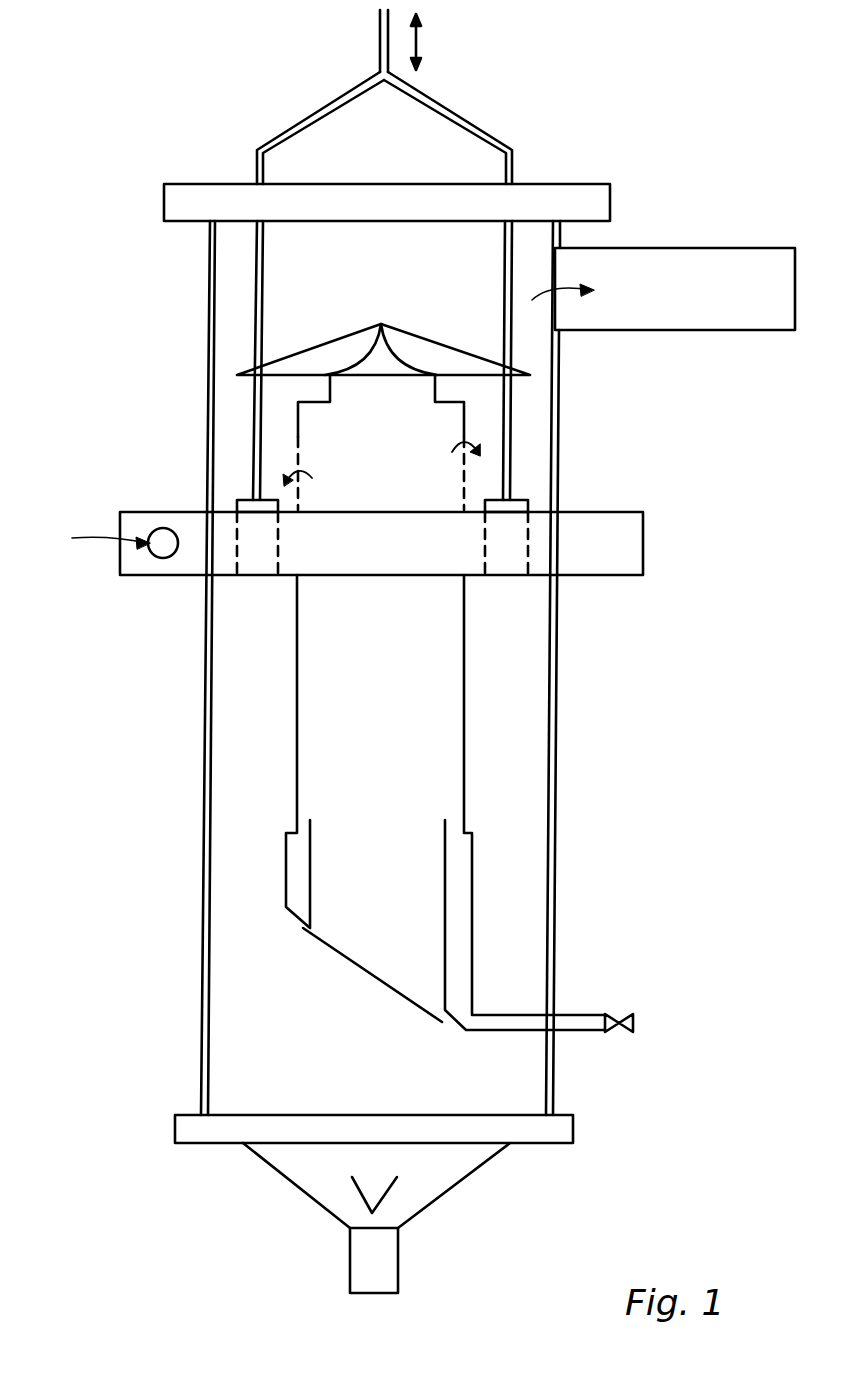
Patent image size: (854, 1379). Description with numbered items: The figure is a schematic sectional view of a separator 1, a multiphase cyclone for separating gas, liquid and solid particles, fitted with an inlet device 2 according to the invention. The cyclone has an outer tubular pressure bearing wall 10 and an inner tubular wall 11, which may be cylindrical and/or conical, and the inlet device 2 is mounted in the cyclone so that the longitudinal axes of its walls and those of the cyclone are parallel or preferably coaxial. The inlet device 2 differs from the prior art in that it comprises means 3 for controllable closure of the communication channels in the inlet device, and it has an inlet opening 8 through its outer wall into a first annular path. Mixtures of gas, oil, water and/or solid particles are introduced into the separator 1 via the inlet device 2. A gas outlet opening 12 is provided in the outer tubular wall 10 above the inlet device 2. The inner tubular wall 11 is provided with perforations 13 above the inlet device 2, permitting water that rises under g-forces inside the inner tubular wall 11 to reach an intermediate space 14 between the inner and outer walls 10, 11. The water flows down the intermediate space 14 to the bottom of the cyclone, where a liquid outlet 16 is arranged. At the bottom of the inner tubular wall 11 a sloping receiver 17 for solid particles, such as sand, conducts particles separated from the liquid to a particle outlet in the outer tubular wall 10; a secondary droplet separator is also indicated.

The separator 1 is at (238, 778).
The inlet device 2 is at (99, 541).
The means for controllable closure 3 is at (468, 122).
The inlet opening 8 is at (163, 528).
The outer tubular pressure bearing wall 10 is at (558, 770).
The inner tubular wall 11 is at (295, 706).
The gas outlet opening 12 is at (747, 270).
The perforations 13 is at (297, 455).
The intermediate space 14 is at (240, 633).
The liquid outlet 16 is at (360, 1263).
The sloping receiver 17 is at (298, 915).